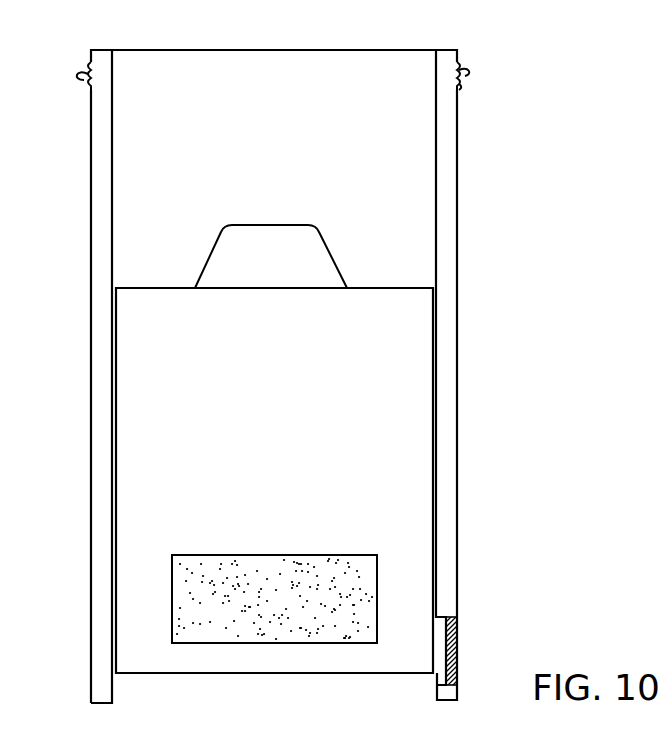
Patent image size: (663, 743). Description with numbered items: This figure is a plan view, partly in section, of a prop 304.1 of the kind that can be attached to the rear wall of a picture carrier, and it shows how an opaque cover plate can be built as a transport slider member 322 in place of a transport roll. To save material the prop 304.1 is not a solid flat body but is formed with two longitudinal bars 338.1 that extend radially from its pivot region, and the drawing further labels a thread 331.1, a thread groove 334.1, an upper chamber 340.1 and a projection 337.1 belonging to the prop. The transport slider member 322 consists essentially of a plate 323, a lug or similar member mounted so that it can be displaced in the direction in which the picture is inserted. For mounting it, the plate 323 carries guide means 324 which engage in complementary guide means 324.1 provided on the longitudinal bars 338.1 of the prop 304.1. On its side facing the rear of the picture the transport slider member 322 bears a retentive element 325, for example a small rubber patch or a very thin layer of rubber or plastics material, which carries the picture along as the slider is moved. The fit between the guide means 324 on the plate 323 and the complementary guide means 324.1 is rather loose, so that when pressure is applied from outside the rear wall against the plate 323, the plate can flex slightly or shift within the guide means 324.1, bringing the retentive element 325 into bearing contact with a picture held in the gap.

The prop 304.1 is at (458, 231).
The thread 331.1 is at (467, 73).
The thread groove 334.1 is at (460, 88).
The upper chamber 340.1 is at (302, 158).
The projection 337.1 is at (271, 256).
The transport slider member 322 is at (118, 287).
The plate 323 is at (420, 418).
The longitudinal bars 338.1 is at (447, 512).
The guide means 324 is at (440, 632).
The complementary guide means 324.1 is at (438, 678).
The retentive element 325 is at (271, 633).